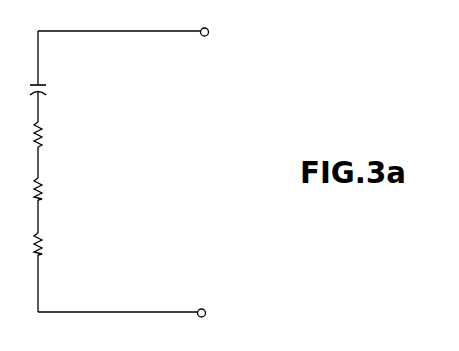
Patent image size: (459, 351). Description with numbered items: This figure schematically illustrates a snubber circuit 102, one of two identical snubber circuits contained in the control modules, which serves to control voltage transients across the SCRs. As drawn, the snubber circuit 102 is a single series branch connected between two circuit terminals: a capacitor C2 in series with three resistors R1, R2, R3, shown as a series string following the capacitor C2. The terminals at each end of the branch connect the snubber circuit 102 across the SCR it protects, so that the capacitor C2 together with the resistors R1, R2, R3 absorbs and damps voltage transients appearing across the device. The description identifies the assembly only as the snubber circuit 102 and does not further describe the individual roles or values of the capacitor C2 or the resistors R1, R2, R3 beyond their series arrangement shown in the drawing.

The snubber circuit 102 is at (78, 31).
The capacitor C2 is at (51, 91).
The resistor R1 is at (54, 134).
The resistor R2 is at (54, 189).
The resistor R3 is at (52, 244).